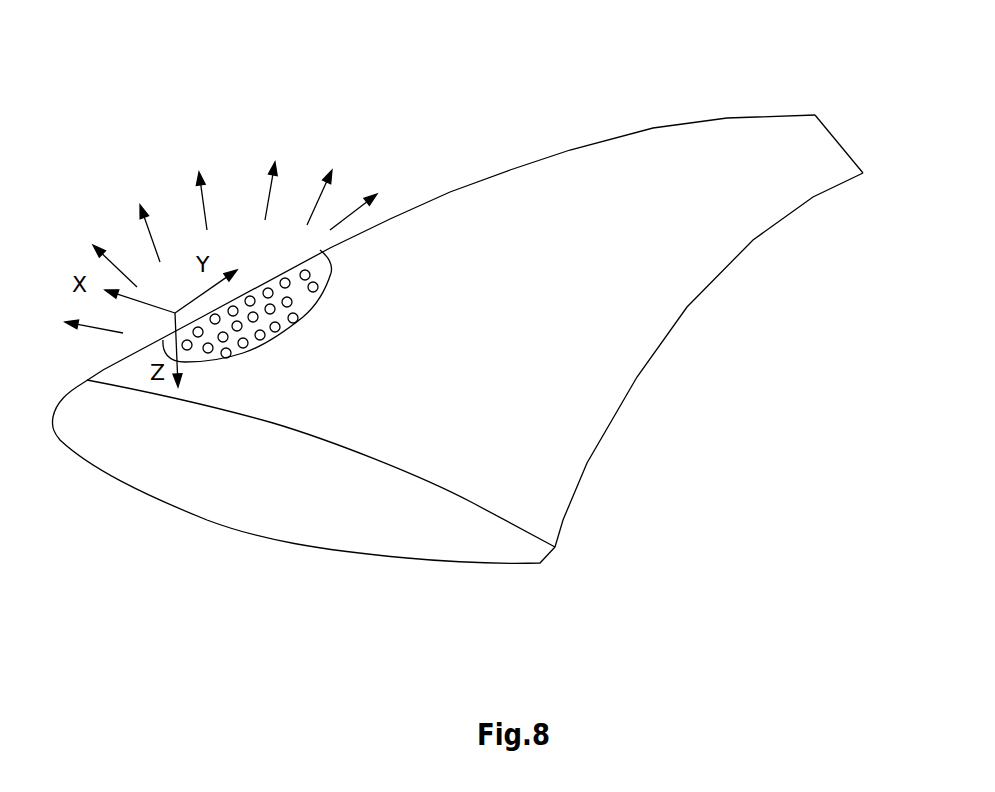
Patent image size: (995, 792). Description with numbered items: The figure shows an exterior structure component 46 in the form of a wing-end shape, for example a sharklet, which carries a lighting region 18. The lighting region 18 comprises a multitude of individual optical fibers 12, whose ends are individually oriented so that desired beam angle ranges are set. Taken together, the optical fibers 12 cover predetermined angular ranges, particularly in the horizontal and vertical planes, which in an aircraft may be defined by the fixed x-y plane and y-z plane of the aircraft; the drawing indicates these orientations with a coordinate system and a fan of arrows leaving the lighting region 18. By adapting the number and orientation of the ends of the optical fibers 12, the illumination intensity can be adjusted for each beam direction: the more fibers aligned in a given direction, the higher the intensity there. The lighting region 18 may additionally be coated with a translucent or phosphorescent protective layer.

The exterior structure component 46 is at (588, 170).
The optical fibers 12 is at (275, 338).
The lighting region 18 is at (295, 303).